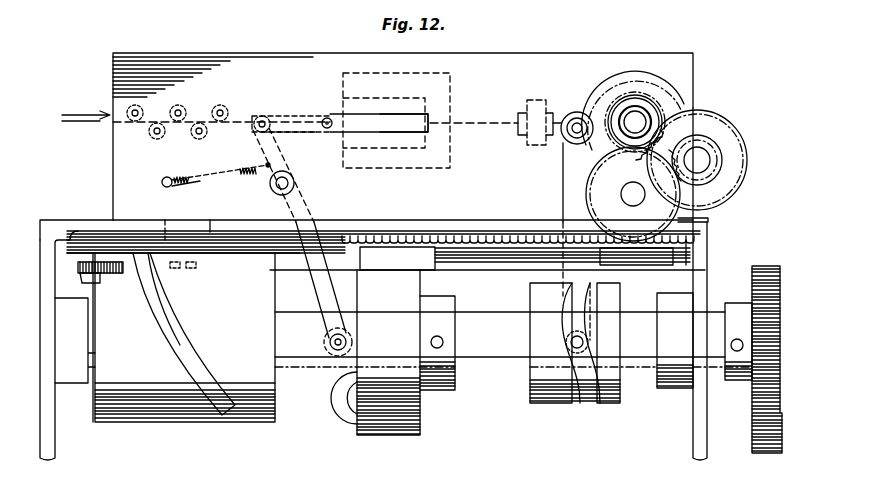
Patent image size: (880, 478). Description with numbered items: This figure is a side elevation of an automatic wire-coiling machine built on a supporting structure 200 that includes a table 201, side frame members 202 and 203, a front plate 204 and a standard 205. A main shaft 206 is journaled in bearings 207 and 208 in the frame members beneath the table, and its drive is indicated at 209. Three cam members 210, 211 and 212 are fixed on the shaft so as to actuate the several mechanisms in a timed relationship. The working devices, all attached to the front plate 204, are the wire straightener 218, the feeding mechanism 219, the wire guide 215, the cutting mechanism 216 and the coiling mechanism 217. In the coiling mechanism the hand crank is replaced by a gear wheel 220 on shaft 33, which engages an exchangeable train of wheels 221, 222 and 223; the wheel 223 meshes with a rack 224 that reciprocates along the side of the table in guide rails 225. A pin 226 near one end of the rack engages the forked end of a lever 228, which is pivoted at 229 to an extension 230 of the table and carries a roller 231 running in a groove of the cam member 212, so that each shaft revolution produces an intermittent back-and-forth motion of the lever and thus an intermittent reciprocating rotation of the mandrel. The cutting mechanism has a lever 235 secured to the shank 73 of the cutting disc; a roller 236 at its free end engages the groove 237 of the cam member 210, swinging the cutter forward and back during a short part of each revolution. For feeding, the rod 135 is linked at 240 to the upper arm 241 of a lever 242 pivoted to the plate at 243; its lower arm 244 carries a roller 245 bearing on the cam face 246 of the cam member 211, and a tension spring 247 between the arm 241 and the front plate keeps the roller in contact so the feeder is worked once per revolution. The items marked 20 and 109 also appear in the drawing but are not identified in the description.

The direction of web feed arrow 20 is at (100, 123).
The shaft 33 is at (628, 118).
The shank 73 is at (566, 138).
The solenoid plunger 109 is at (360, 126).
The rod 135 is at (318, 118).
The supporting structure 200 is at (59, 206).
The table 201 is at (84, 232).
The side frame member 202 is at (694, 450).
The side frame member 203 is at (50, 450).
The front plate 204 is at (244, 62).
The standard 205 is at (672, 94).
The main shaft 206 is at (476, 328).
The bearing 207 is at (672, 376).
The bearing 208 is at (72, 372).
The drive 209 is at (752, 425).
The cam member 210 is at (553, 397).
The cam member 211 is at (392, 425).
The cam member 212 is at (163, 412).
The wire guide 215 is at (528, 100).
The cutting mechanism 216 is at (573, 112).
The coiling mechanism 217 is at (656, 64).
The wire straightener 218 is at (199, 124).
The feeding mechanism 219 is at (358, 83).
The gear wheel 220 is at (632, 118).
The wheel 221 is at (733, 137).
The wheel 222 is at (718, 173).
The wheel 223 is at (663, 215).
The rack 224 is at (481, 239).
The guide rails 225 is at (636, 258).
The pin 226 is at (92, 283).
The lever 228 is at (128, 240).
The pivot 229 is at (190, 266).
The extension 230 is at (206, 230).
The roller 231 is at (145, 282).
The lever 235 is at (565, 187).
The roller 236 is at (568, 355).
The cam groove 237 is at (589, 392).
The link 240 is at (262, 115).
The upper arm 241 is at (282, 140).
The lever 242 is at (312, 210).
The pivot 243 is at (295, 183).
The lower arm 244 is at (310, 288).
The roller 245 is at (333, 352).
The cam face 246 is at (343, 402).
The tension spring 247 is at (210, 173).